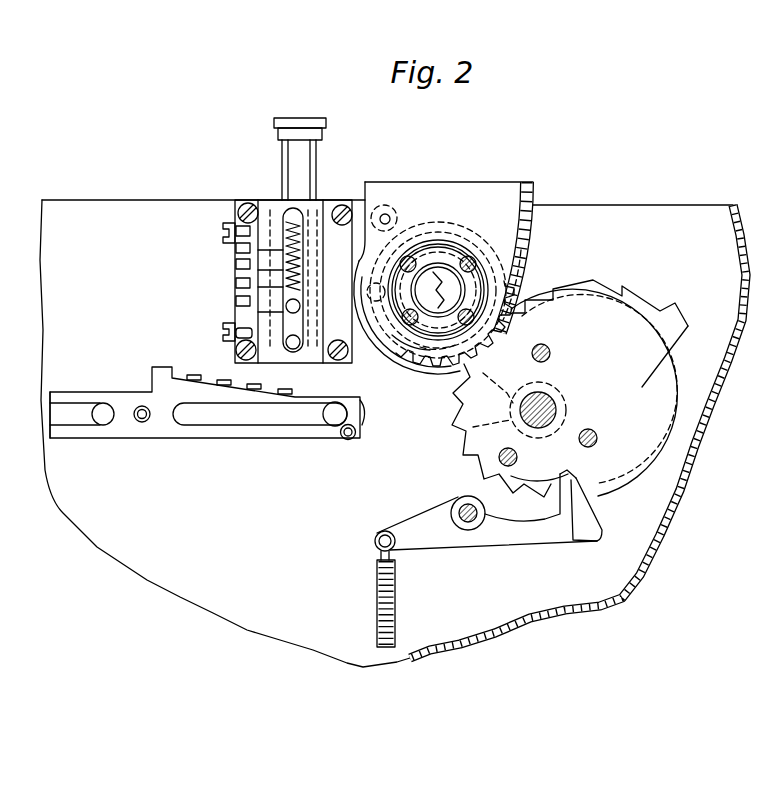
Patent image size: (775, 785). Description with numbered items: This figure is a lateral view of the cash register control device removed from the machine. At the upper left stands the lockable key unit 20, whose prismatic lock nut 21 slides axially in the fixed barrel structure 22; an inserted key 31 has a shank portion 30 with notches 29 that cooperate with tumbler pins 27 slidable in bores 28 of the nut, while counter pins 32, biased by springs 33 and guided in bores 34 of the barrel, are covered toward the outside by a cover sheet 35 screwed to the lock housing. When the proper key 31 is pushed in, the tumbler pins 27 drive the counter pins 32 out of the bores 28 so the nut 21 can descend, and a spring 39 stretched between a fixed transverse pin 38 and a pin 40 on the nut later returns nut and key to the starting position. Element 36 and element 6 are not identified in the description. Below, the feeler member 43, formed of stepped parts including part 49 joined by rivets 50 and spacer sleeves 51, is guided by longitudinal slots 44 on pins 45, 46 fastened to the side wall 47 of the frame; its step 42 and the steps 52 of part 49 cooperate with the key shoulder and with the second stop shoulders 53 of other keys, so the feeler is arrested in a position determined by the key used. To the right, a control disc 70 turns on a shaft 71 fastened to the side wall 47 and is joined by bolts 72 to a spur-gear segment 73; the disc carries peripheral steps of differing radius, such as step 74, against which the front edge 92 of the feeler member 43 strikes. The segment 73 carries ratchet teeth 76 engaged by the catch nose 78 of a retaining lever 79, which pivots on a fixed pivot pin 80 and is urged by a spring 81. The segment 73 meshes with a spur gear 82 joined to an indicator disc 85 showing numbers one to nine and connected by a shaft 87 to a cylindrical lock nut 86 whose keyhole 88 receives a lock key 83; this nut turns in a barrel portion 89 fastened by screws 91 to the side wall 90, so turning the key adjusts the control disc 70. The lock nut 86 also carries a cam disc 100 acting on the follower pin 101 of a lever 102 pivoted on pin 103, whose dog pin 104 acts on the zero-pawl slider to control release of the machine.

The plate 6 is at (147, 213).
The lockable key unit 20 is at (340, 210).
The lock nut 21 is at (305, 212).
The barrel structure 22 is at (354, 332).
The tumbler pins 27 is at (283, 206).
The bores 28 is at (289, 206).
The notches 29 is at (236, 322).
The shank portion 30 is at (305, 162).
The key 31 is at (297, 118).
The counter pins 32 is at (247, 203).
The springs 33 is at (236, 248).
The bores 34 is at (270, 206).
The cover sheet 35 is at (235, 360).
The stop 36 is at (226, 338).
The fixed transverse pin 38 is at (345, 205).
The spring 39 is at (303, 272).
The pin 40 is at (301, 306).
The step 42 is at (291, 395).
The feeler member 43 is at (128, 426).
The longitudinal slots 44 is at (80, 426).
The pin 45 is at (104, 425).
The pin 46 is at (336, 426).
The side wall 47 is at (297, 613).
The stepped part 49 is at (222, 437).
The rivets 50 is at (141, 406).
The spacer sleeves 51 is at (351, 439).
The steps 52 is at (281, 387).
The second stop shoulders 53 is at (170, 376).
The control disc 70 is at (645, 312).
The shaft 71 is at (556, 403).
The bolts 72 is at (551, 352).
The gear segment 73 is at (550, 318).
The step 74 is at (686, 325).
The ratchet teeth 76 is at (600, 530).
The catch nose 78 is at (568, 482).
The retaining lever 79 is at (508, 552).
The fixed pivot pin 80 is at (468, 531).
The spring 81 is at (396, 594).
The spur gear 82 is at (527, 262).
The lock key 83 is at (430, 315).
The indicator disc 85 is at (470, 221).
The lock nut 86 is at (449, 240).
The shaft 87 is at (436, 330).
The keyhole 88 is at (418, 342).
The barrel portion 89 is at (440, 288).
The side wall 90 is at (528, 192).
The screws 91 is at (477, 262).
The front edge 92 is at (363, 425).
The cam disc 100 is at (466, 246).
The follower pin 101 is at (420, 226).
The lever 102 is at (410, 222).
The pin 103 is at (386, 207).
The dog pin 104 is at (395, 338).